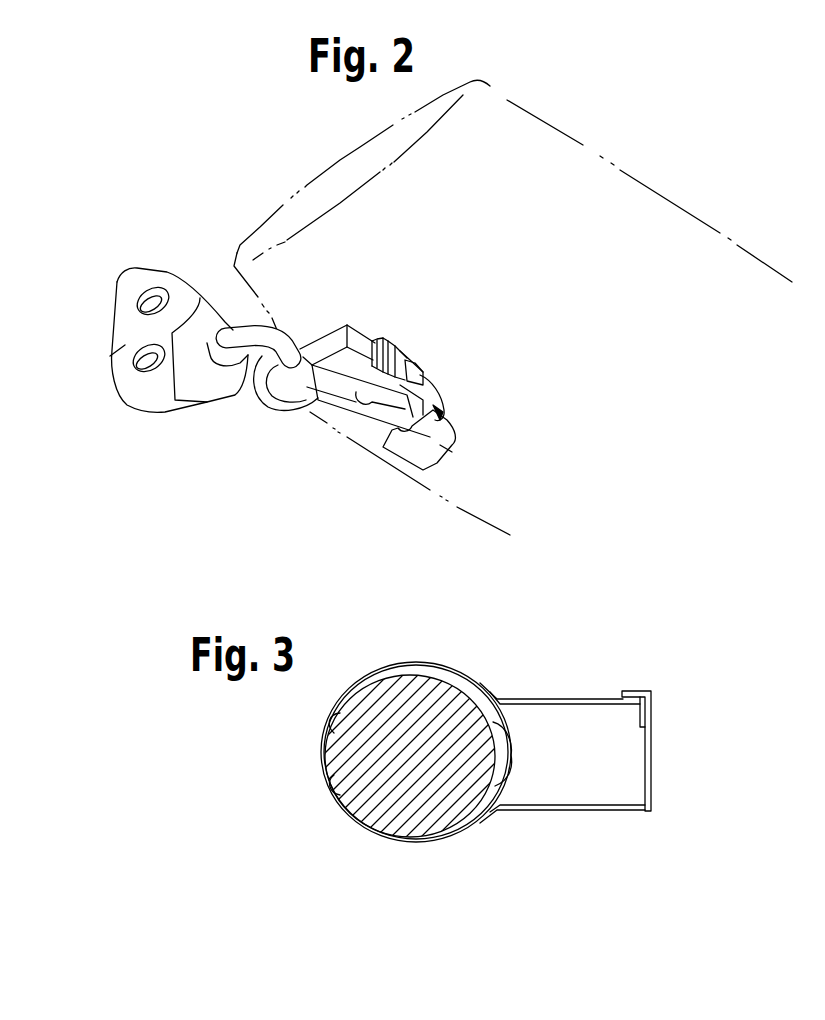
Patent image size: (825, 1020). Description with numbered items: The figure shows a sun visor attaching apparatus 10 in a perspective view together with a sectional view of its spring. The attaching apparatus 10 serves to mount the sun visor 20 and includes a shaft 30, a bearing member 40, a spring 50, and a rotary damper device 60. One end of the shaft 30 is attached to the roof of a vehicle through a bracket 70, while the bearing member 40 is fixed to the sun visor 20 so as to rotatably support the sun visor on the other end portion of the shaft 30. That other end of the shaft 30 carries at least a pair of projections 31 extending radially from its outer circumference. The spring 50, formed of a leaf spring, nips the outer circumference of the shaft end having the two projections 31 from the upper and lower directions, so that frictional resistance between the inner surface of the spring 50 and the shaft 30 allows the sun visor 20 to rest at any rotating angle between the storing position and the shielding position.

In FIG. 2, the attaching apparatus 10 is at (245, 123).
In FIG. 2, the sun visor 20 is at (572, 167).
In FIG. 2, the shaft 30 is at (250, 358).
In FIG. 3, the shaft 30 is at (433, 817).
In FIG. 3, the projections 31 is at (320, 749).
In FIG. 2, the bearing member 40 is at (311, 387).
In FIG. 3, the bearing member 40 is at (605, 782).
In FIG. 2, the spring 50 is at (349, 397).
In FIG. 3, the spring 50 is at (654, 743).
In FIG. 2, the rotary damper device 60 is at (443, 472).
In FIG. 2, the bracket 70 is at (121, 405).